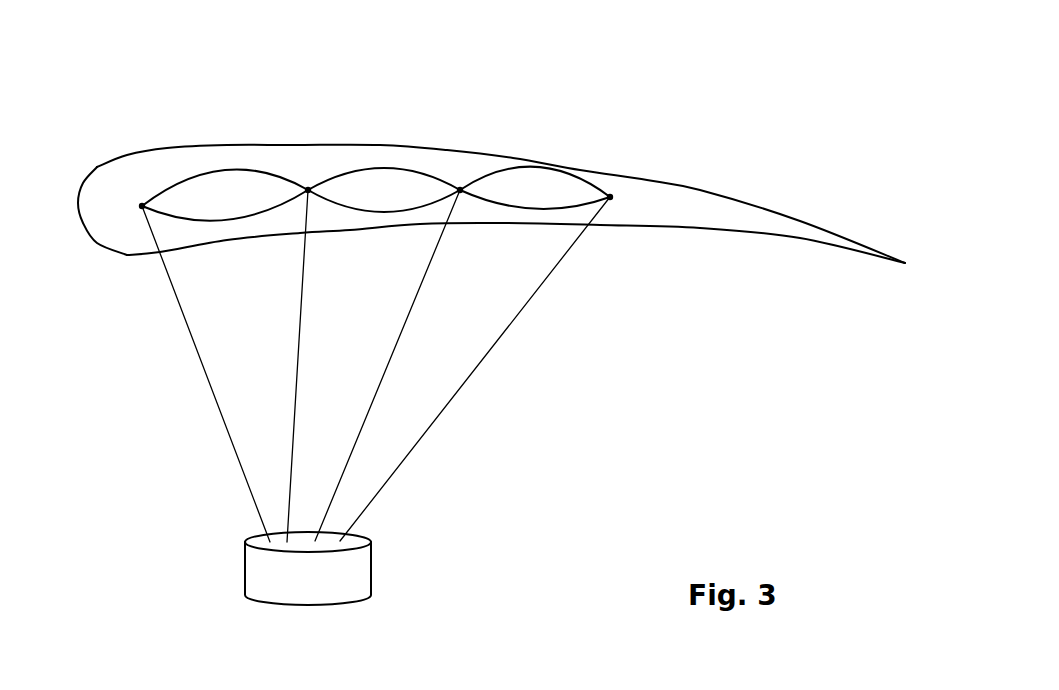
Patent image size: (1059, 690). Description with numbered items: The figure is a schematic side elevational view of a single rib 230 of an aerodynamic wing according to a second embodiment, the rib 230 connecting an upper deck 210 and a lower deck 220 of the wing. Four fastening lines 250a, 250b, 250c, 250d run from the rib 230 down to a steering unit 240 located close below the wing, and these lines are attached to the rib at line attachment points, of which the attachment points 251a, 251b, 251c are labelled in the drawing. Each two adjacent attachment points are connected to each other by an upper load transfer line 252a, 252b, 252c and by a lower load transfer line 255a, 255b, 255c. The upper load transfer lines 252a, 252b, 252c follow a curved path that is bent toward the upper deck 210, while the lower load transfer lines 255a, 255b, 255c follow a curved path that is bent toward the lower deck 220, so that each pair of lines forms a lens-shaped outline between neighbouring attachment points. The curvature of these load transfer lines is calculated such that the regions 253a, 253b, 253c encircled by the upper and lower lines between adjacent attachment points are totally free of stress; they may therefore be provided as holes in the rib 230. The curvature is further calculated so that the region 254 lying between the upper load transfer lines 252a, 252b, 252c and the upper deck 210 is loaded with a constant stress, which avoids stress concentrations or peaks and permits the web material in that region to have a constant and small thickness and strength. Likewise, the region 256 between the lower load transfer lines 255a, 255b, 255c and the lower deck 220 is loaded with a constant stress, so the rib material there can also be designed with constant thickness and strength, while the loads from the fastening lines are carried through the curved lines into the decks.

The upper deck 210 is at (741, 198).
The lower deck 220 is at (738, 235).
The rib 230 is at (110, 212).
The steering unit 240 is at (350, 582).
The fastening line 250a is at (232, 445).
The fastening line 250b is at (293, 432).
The fastening line 250c is at (353, 450).
The fastening line 250d is at (426, 432).
The line attachment point 251a is at (142, 206).
The line attachment point 251b is at (308, 190).
The line attachment point 251c is at (460, 190).
The upper load transfer line 252a is at (207, 172).
The upper load transfer line 252b is at (367, 168).
The upper load transfer line 252c is at (528, 168).
The stress-free region 253a is at (247, 203).
The stress-free region 253b is at (404, 198).
The stress-free region 253c is at (561, 198).
The region between upper load transfer lines and upper deck 254 is at (397, 156).
The lower load transfer line 255a is at (221, 220).
The lower load transfer line 255b is at (350, 210).
The lower load transfer line 255c is at (493, 210).
The region between lower load transfer lines and lower deck 256 is at (412, 215).